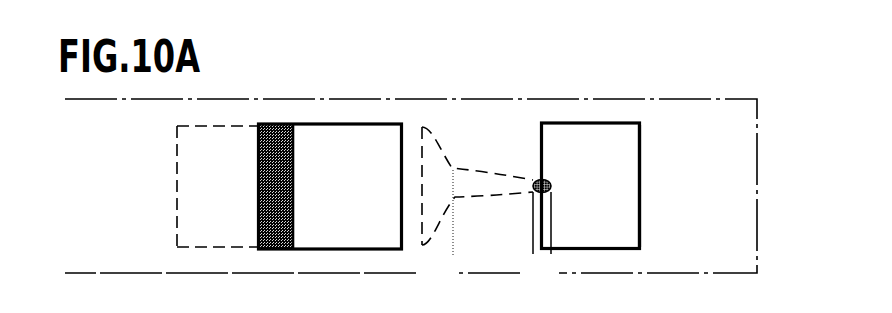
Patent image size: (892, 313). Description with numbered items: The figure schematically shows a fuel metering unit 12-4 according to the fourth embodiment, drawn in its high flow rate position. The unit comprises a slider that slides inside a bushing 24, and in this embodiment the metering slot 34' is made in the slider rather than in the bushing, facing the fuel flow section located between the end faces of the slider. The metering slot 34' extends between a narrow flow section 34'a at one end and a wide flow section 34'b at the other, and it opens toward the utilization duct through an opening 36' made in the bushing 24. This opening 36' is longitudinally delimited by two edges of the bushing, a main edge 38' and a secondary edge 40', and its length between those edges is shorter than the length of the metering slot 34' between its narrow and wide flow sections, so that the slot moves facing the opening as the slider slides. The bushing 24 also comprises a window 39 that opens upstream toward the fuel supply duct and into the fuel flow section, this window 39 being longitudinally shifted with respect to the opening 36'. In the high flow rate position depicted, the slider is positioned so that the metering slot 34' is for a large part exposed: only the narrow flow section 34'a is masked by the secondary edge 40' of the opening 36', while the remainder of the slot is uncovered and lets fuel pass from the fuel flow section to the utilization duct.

The fuel metering unit 12-4 is at (694, 74).
The bushing 24 is at (718, 126).
The window 39 is at (324, 123).
The metering slot 34' is at (487, 198).
The wide flow section 34'b is at (475, 207).
The narrow flow section 34'a is at (523, 234).
The main edge 38' is at (520, 208).
The opening 36' is at (630, 158).
The secondary edge 40' is at (673, 186).